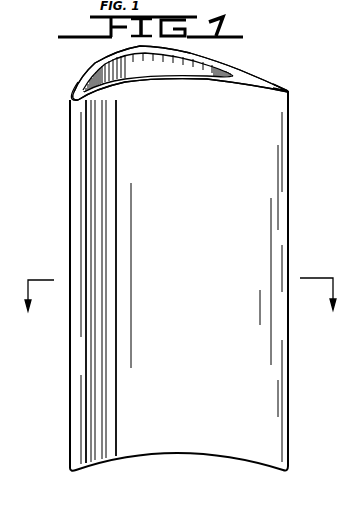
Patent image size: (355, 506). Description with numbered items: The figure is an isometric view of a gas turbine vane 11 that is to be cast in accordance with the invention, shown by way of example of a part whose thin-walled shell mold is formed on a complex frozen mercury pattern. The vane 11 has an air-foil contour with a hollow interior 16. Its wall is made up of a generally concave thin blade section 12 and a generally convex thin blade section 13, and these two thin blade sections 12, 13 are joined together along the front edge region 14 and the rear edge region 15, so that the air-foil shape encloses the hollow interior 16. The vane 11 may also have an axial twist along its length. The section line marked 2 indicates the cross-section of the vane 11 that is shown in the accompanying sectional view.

The gas turbine vane 11 is at (81, 71).
The concave thin blade section 12 is at (196, 80).
The convex thin blade section 13 is at (195, 57).
The front edge region 14 is at (75, 92).
The rear edge region 15 is at (290, 92).
The hollow interior 16 is at (142, 70).
The section line 2- 2 is at (180, 304).